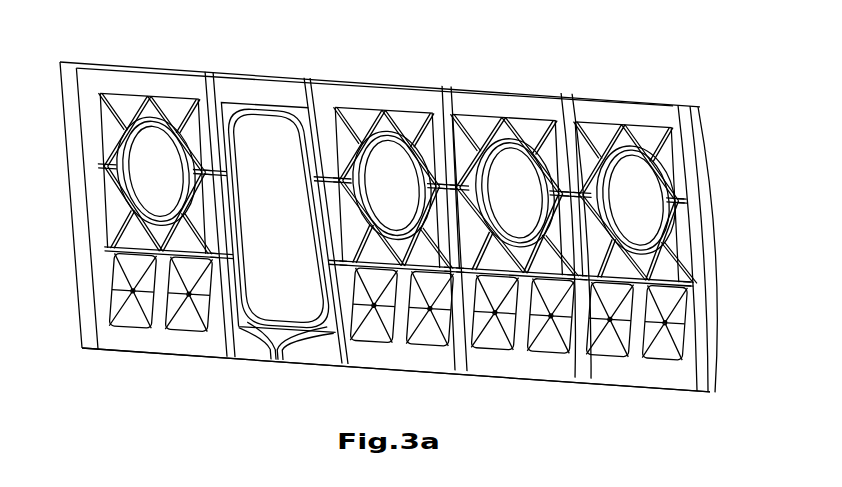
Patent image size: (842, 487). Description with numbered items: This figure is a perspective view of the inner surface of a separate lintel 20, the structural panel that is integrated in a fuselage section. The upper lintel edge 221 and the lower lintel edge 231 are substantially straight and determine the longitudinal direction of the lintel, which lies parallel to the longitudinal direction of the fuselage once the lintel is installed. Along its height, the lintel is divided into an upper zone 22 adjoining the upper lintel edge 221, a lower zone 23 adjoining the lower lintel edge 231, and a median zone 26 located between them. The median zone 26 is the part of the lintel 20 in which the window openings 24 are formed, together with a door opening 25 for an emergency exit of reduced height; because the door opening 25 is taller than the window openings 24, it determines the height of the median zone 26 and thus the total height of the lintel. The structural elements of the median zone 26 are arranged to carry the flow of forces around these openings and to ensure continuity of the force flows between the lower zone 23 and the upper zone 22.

The lintel 20 is at (146, 382).
The upper zone 22 is at (705, 108).
The upper lintel edge 221 is at (549, 94).
The lower zone 23 is at (723, 357).
The lower lintel edge 231 is at (540, 380).
The window opening 24 is at (410, 197).
The door opening 25 is at (295, 222).
The median zone 26 is at (729, 345).